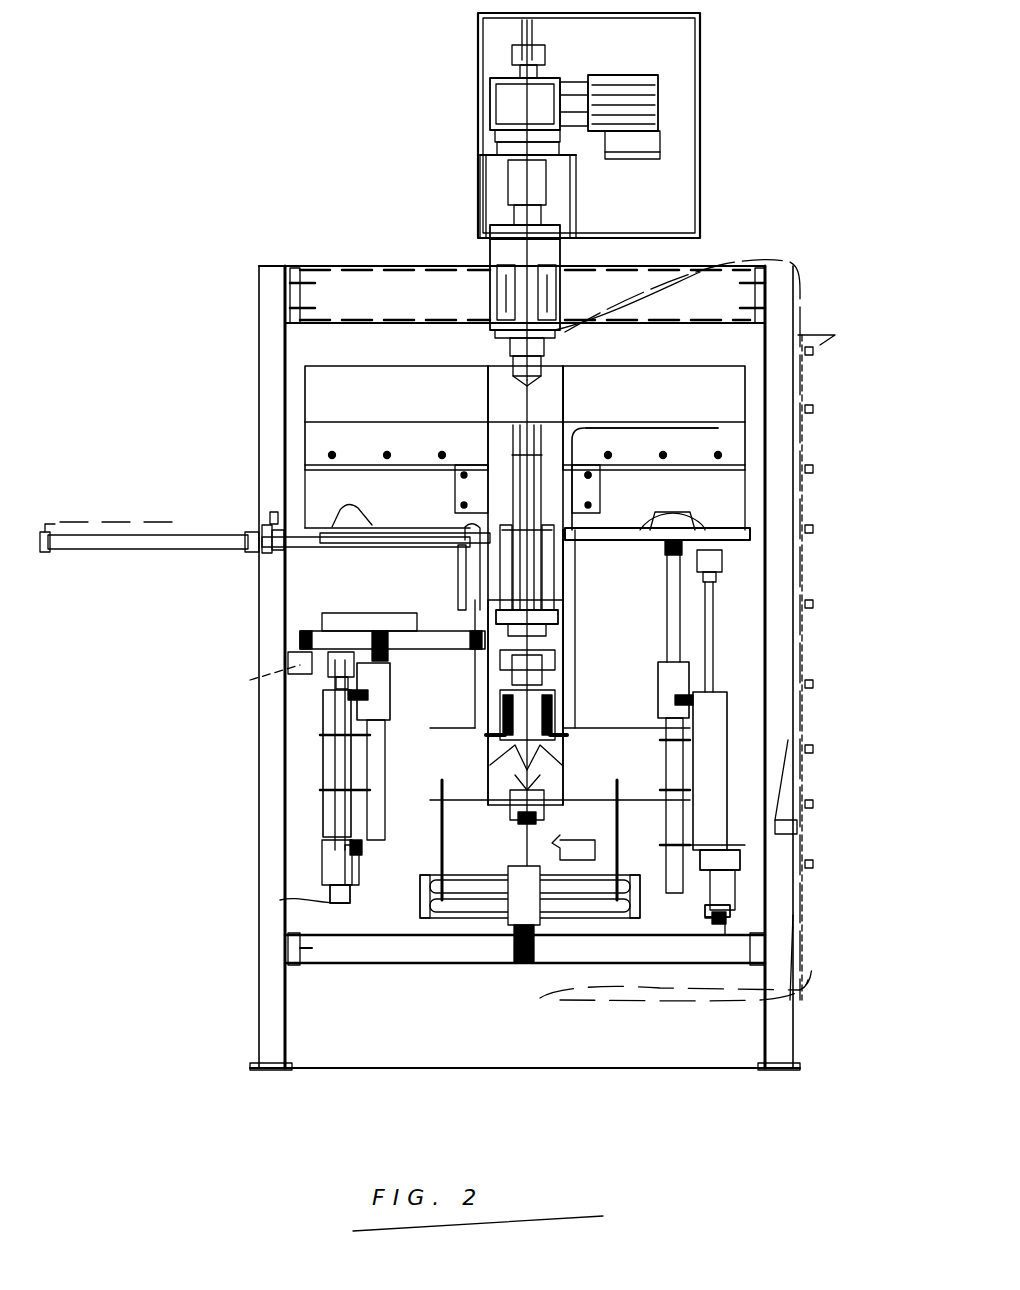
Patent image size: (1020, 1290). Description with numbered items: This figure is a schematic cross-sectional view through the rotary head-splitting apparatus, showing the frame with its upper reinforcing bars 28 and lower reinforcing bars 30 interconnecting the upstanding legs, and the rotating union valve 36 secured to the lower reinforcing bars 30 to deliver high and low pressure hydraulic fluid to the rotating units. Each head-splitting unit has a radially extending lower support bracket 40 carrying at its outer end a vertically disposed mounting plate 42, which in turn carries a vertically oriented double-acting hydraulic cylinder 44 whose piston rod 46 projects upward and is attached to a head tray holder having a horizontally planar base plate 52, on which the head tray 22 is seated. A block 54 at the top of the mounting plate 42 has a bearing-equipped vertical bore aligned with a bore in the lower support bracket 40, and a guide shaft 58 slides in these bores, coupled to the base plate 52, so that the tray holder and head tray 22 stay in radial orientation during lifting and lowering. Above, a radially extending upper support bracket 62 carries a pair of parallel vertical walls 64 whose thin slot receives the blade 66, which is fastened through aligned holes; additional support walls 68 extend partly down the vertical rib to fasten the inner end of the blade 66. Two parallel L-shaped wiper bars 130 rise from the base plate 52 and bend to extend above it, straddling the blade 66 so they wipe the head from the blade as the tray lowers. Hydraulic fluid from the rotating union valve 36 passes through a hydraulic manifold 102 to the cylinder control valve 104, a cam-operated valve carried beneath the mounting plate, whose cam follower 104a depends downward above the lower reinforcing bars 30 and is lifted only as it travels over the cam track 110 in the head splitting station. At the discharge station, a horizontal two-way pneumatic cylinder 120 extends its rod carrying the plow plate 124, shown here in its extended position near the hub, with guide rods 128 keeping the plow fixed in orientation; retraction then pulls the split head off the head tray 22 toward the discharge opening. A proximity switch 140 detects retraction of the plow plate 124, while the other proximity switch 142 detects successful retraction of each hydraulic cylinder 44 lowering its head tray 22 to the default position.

The head tray 22 is at (610, 545).
The upper reinforcing bars 28 is at (345, 290).
The lower reinforcing bars 30 is at (438, 950).
The rotating union valve 36 is at (540, 915).
The lower support bracket 40 is at (655, 795).
The mounting plate 42 is at (695, 760).
The double-acting hydraulic cylinder 44 is at (720, 705).
The piston rod 46 is at (718, 625).
The base plate 52 is at (648, 545).
The block 54 is at (662, 702).
The guide shaft 58 is at (675, 637).
The upper support bracket 62 is at (705, 410).
The vertical walls 64 is at (685, 448).
The blade 66 is at (402, 470).
The additional support walls 68 is at (588, 478).
The hydraulic manifold 102 is at (455, 893).
The cylinder control valve 104 is at (322, 888).
The cam follower 104a is at (350, 935).
The cam track 110 is at (745, 920).
The pneumatic cylinder 120 is at (148, 546).
The plow plate 124 is at (448, 577).
The guide rods 128 is at (393, 548).
The wiper bars 130 is at (340, 552).
The proximity switch 140 is at (268, 517).
The proximity switch 142 is at (290, 670).